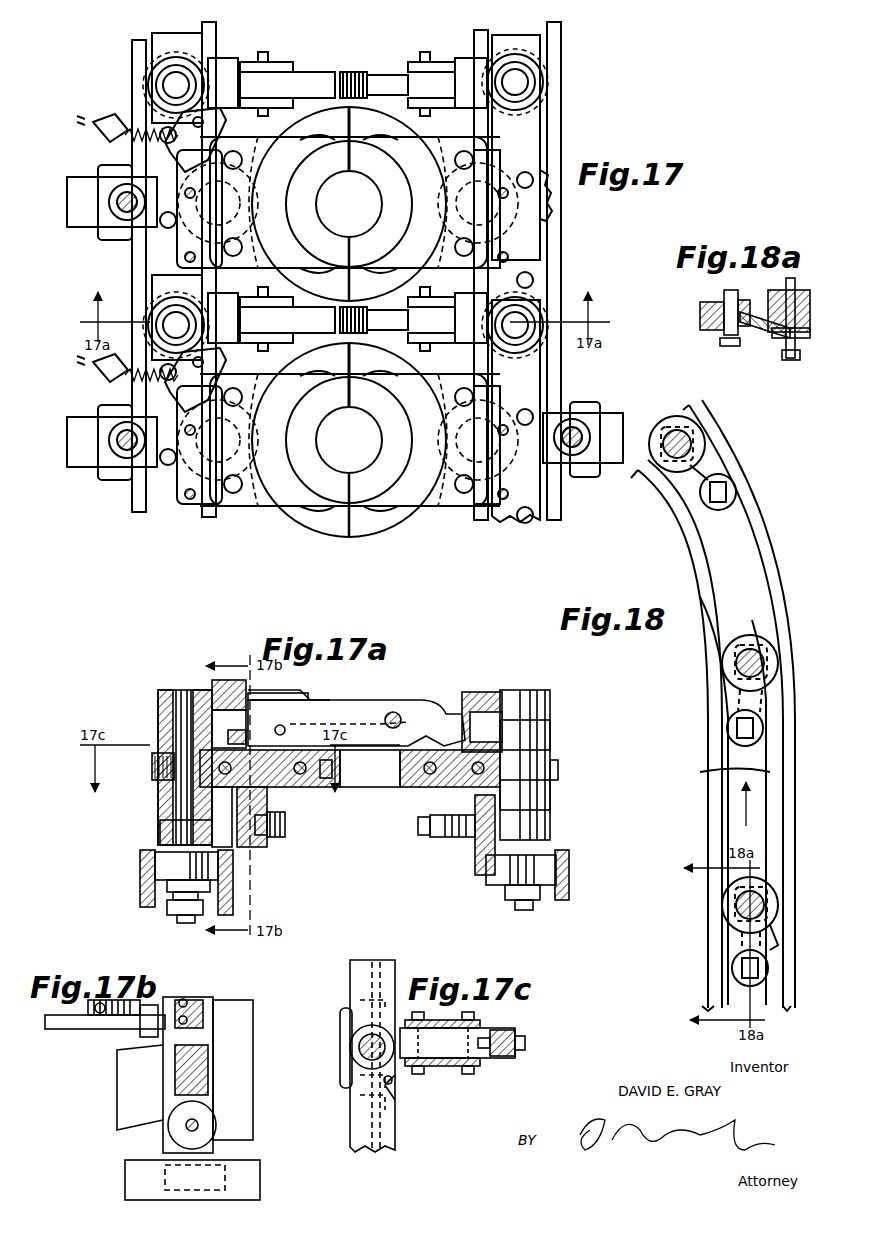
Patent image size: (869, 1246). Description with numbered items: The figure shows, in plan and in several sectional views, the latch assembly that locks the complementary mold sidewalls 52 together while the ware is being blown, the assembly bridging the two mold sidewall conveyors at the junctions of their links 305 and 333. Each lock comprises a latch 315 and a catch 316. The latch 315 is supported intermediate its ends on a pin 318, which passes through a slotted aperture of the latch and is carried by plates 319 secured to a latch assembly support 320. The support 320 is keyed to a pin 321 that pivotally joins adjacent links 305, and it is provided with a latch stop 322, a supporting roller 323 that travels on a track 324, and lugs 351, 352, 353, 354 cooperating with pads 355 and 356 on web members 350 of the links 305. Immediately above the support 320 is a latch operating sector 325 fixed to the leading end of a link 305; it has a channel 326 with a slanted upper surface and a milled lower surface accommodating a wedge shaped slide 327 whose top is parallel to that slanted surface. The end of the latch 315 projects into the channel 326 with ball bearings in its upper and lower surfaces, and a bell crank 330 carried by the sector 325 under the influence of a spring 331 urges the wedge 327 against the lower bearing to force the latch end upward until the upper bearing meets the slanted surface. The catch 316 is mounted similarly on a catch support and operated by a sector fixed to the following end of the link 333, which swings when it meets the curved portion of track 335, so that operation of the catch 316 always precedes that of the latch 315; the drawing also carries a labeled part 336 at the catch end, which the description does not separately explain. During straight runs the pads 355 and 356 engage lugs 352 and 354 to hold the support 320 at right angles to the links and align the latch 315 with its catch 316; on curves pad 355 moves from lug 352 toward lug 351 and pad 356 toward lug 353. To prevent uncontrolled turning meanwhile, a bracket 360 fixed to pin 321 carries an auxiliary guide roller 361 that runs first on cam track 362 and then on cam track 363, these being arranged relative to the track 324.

In FIG. 17, the mold sidewalls 52 is at (330, 505).
In FIG. 17, the links 305 is at (158, 495).
In FIG. 17A, the links 305 is at (160, 832).
In FIG. 17, the latch 315 is at (313, 80).
In FIG. 17A, the latch 315 is at (360, 698).
In FIG. 17B, the latch 315 is at (175, 1060).
In FIG. 17, the catch 316 is at (378, 80).
In FIG. 17A, the catch 316 is at (378, 722).
In FIG. 17A, the pin 318 is at (322, 692).
In FIG. 17, the plates 319 is at (265, 80).
In FIG. 17A, the plates 319 is at (268, 704).
In FIG. 17C, the plates 319 is at (448, 1066).
In FIG. 17A, the latch assembly support 320 is at (152, 762).
In FIG. 17C, the latch assembly support 320 is at (490, 1060).
In FIG. 17, the pin 321 is at (160, 300).
In FIG. 18A, the pin 321 is at (772, 285).
In FIG. 17A, the pin 321 is at (180, 798).
In FIG. 17A, the latch stop 322 is at (330, 790).
In FIG. 17C, the latch stop 322 is at (504, 1034).
In FIG. 17A, the supporting roller 323 is at (225, 820).
In FIG. 17A, the track 324 is at (175, 868).
In FIG. 17, the latch operating sector 325 is at (150, 345).
In FIG. 17A, the latch operating sector 325 is at (160, 715).
In FIG. 17A, the channel 326 is at (218, 690).
In FIG. 17B, the channel 326 is at (185, 1003).
In FIG. 17A, the wedge shaped slide 327 is at (402, 764).
In FIG. 17B, the wedge shaped slide 327 is at (170, 1038).
In FIG. 17, the bell crank 330 is at (205, 378).
In FIG. 17, the spring 331 is at (135, 385).
In FIG. 17B, the spring 331 is at (120, 1018).
In FIG. 17, the link 333 is at (525, 140).
In FIG. 17, the track 335 is at (563, 58).
In FIG. 17A, the block 336 is at (480, 692).
In FIG. 17C, the web members 350 is at (365, 980).
In FIG. 17C, the lug 351 is at (342, 1020).
In FIG. 17C, the lug 352 is at (350, 1045).
In FIG. 17C, the lug 353 is at (358, 1078).
In FIG. 17C, the lug 354 is at (400, 1102).
In FIG. 17C, the pad 355 is at (362, 1000).
In FIG. 17C, the pad 356 is at (358, 1098).
In FIG. 18A, the bracket 360 is at (770, 335).
In FIG. 18, the bracket 360 is at (700, 470).
In FIG. 17A, the bracket 360 is at (166, 906).
In FIG. 18A, the auxiliary guide roller 361 is at (714, 335).
In FIG. 18, the cam track section 362 is at (706, 772).
In FIG. 18, the cam track section 363 is at (725, 620).